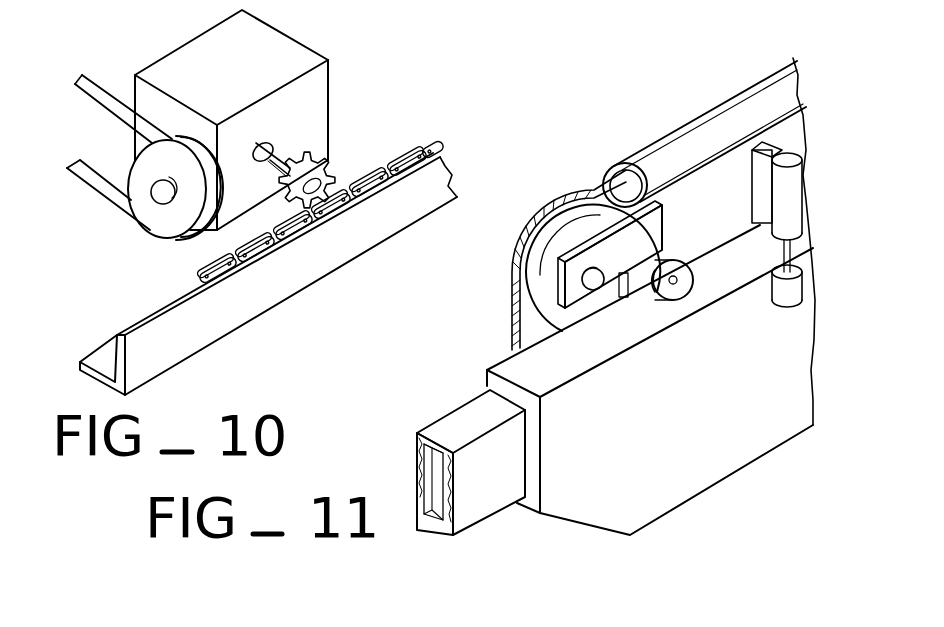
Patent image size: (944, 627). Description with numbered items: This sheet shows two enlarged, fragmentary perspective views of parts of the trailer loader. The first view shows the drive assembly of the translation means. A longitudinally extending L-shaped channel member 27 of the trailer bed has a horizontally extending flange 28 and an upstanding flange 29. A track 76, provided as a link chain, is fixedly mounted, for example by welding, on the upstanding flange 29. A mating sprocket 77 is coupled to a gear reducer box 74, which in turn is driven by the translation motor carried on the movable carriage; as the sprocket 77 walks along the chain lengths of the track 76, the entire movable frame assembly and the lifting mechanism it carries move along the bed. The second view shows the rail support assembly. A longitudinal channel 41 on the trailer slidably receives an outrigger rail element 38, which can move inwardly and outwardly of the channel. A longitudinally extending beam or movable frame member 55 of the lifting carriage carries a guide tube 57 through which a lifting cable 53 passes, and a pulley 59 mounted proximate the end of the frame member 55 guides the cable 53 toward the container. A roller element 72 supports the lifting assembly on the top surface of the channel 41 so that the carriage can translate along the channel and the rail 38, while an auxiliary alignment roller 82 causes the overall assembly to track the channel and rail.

In FIG. 10, the gear reducer box 74 is at (315, 97).
In FIG. 10, the sprocket 77 is at (333, 173).
In FIG. 10, the track 76 is at (427, 150).
In FIG. 10, the upstanding flange 29 is at (282, 273).
In FIG. 10, the horizontally extending flange 28 is at (105, 358).
In FIG. 10, the L-shaped channel member 27 is at (148, 305).
In FIG. 11, the channel 41 is at (717, 268).
In FIG. 11, the rail element 38 is at (440, 432).
In FIG. 11, the pulley 59 is at (573, 318).
In FIG. 11, the cable 53 is at (580, 197).
In FIG. 11, the guide tube 57 is at (675, 137).
In FIG. 11, the movable frame member 55 is at (732, 210).
In FIG. 11, the roller element 72 is at (672, 300).
In FIG. 11, the auxiliary alignment roller 82 is at (788, 295).